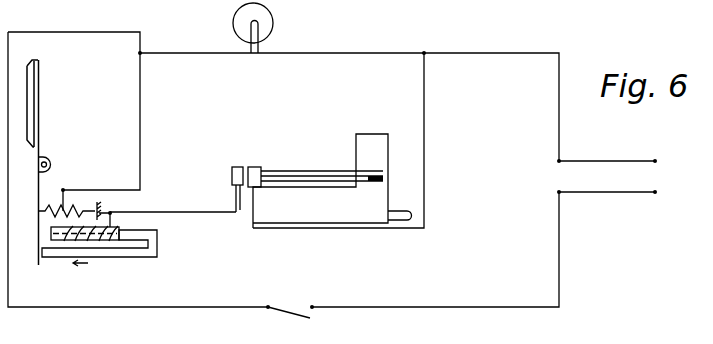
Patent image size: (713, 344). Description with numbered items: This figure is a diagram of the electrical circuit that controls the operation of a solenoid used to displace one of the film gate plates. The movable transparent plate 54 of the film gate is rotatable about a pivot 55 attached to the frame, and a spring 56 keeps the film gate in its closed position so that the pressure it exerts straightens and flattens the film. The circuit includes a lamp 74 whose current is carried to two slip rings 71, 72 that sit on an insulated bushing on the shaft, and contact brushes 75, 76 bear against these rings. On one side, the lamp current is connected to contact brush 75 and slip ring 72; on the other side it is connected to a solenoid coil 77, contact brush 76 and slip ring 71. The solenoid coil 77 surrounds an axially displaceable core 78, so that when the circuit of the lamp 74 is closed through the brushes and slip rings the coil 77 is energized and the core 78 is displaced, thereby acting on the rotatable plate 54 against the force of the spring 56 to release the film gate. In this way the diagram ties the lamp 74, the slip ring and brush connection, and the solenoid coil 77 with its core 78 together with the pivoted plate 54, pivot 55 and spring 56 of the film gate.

The transparent plate 54 is at (35, 110).
The pivot 55 is at (49, 163).
The spring 56 is at (77, 210).
The slip ring 71 is at (237, 166).
The slip ring 72 is at (260, 167).
The signal lamp 74 is at (272, 19).
The contact brush 75 is at (256, 207).
The contact brush 76 is at (235, 197).
The solenoid coil 77 is at (76, 236).
The core 78 is at (157, 246).